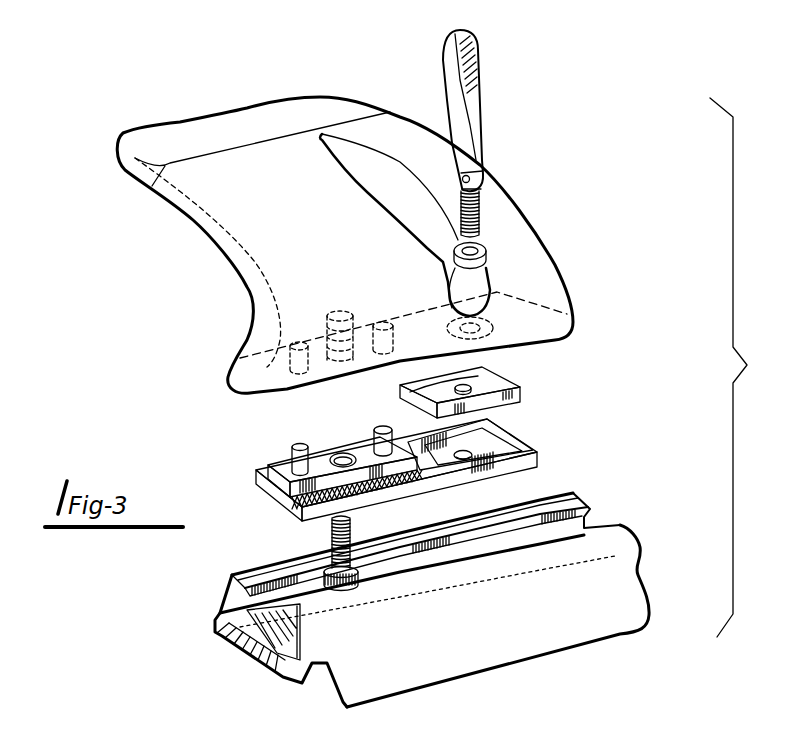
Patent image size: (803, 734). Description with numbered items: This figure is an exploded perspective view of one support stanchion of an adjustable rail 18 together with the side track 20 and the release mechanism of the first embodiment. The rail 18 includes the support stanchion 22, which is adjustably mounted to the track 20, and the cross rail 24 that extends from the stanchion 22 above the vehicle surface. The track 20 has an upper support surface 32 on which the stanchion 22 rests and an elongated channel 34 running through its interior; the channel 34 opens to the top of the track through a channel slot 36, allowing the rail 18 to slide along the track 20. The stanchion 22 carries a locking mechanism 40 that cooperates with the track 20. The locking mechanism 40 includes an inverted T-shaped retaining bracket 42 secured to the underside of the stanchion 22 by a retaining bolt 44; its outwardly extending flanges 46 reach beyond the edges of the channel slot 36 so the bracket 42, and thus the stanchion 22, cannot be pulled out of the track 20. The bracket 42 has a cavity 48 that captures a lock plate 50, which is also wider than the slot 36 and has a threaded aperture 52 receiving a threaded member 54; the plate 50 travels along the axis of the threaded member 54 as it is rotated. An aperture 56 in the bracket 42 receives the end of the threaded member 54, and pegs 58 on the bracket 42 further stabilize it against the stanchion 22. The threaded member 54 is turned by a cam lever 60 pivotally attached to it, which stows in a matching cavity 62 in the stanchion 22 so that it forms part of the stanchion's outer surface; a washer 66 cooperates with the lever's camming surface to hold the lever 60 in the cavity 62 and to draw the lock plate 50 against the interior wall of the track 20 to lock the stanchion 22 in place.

The adjustable rail 18 is at (110, 162).
The side track 20 is at (658, 583).
The support stanchion 22 is at (227, 198).
The cross rail 24 is at (250, 120).
The upper support surface 32 is at (263, 584).
The elongated channel 34 is at (278, 628).
The channel slot 36 is at (593, 520).
The locking mechanism 40 is at (538, 415).
The retaining bracket 42 is at (280, 470).
The retaining bolt 44 is at (345, 590).
The outwardly extending flange 46 is at (252, 488).
The cavity 48 is at (497, 446).
The lock plate 50 is at (495, 381).
The threaded aperture 52 is at (400, 399).
The threaded member 54 is at (483, 222).
The aperture 56 is at (466, 461).
The peg 58 is at (300, 446).
The cam lever 60 is at (470, 121).
The cavity 62 is at (367, 153).
The washer 66 is at (488, 254).